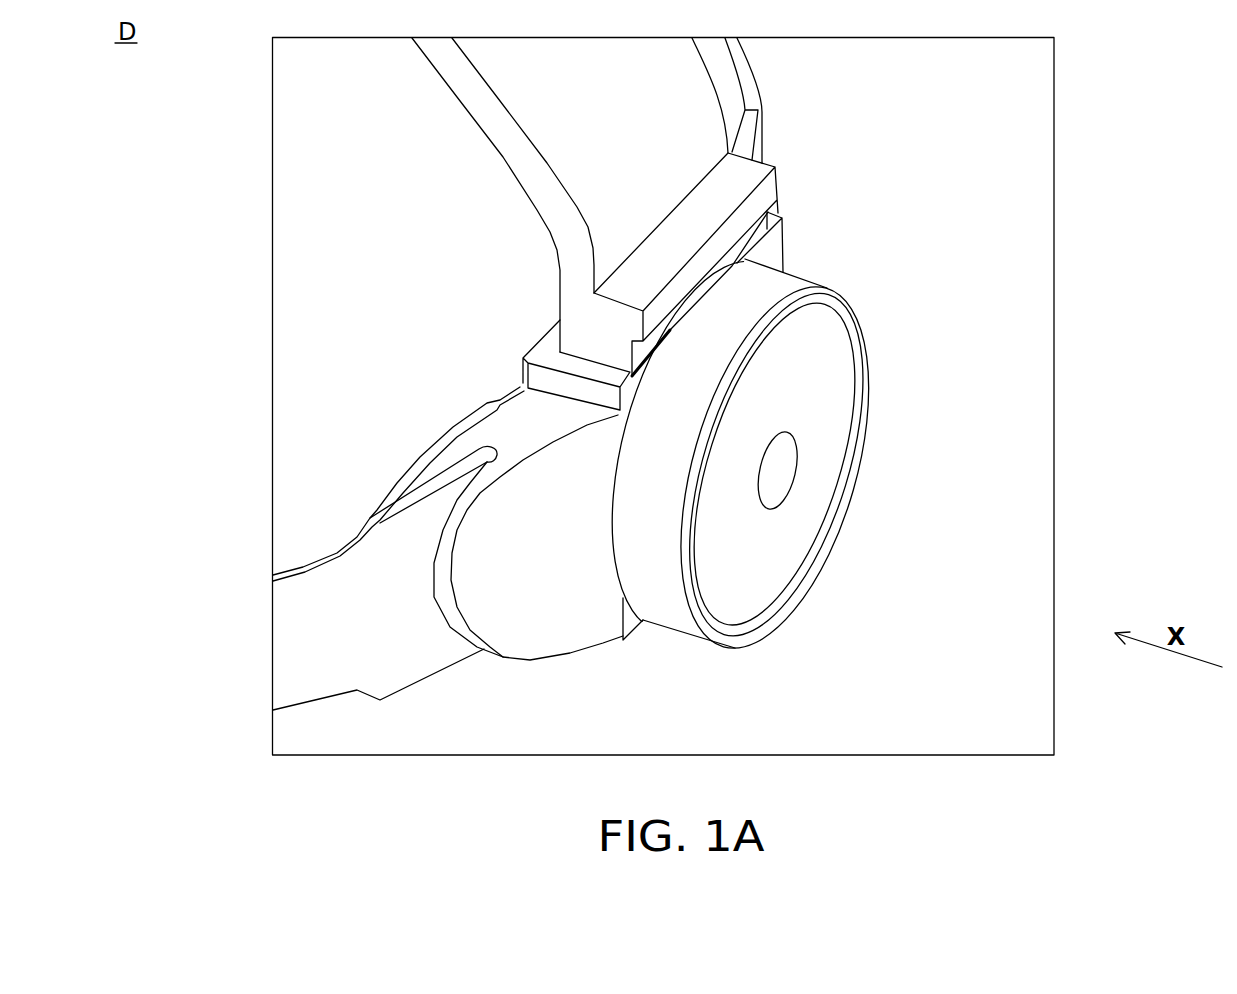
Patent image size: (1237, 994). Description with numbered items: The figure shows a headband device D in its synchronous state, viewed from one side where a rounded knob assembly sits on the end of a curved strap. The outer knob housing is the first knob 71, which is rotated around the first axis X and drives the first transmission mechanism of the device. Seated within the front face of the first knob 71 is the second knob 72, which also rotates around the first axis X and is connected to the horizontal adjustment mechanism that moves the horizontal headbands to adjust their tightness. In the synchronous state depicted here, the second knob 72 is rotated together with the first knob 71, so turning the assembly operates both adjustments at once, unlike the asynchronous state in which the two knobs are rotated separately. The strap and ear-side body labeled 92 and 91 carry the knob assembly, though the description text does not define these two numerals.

The first knob 71 is at (673, 612).
The second knob 72 is at (760, 587).
The ear cup 91 is at (557, 642).
The headband strap 92 is at (508, 131).